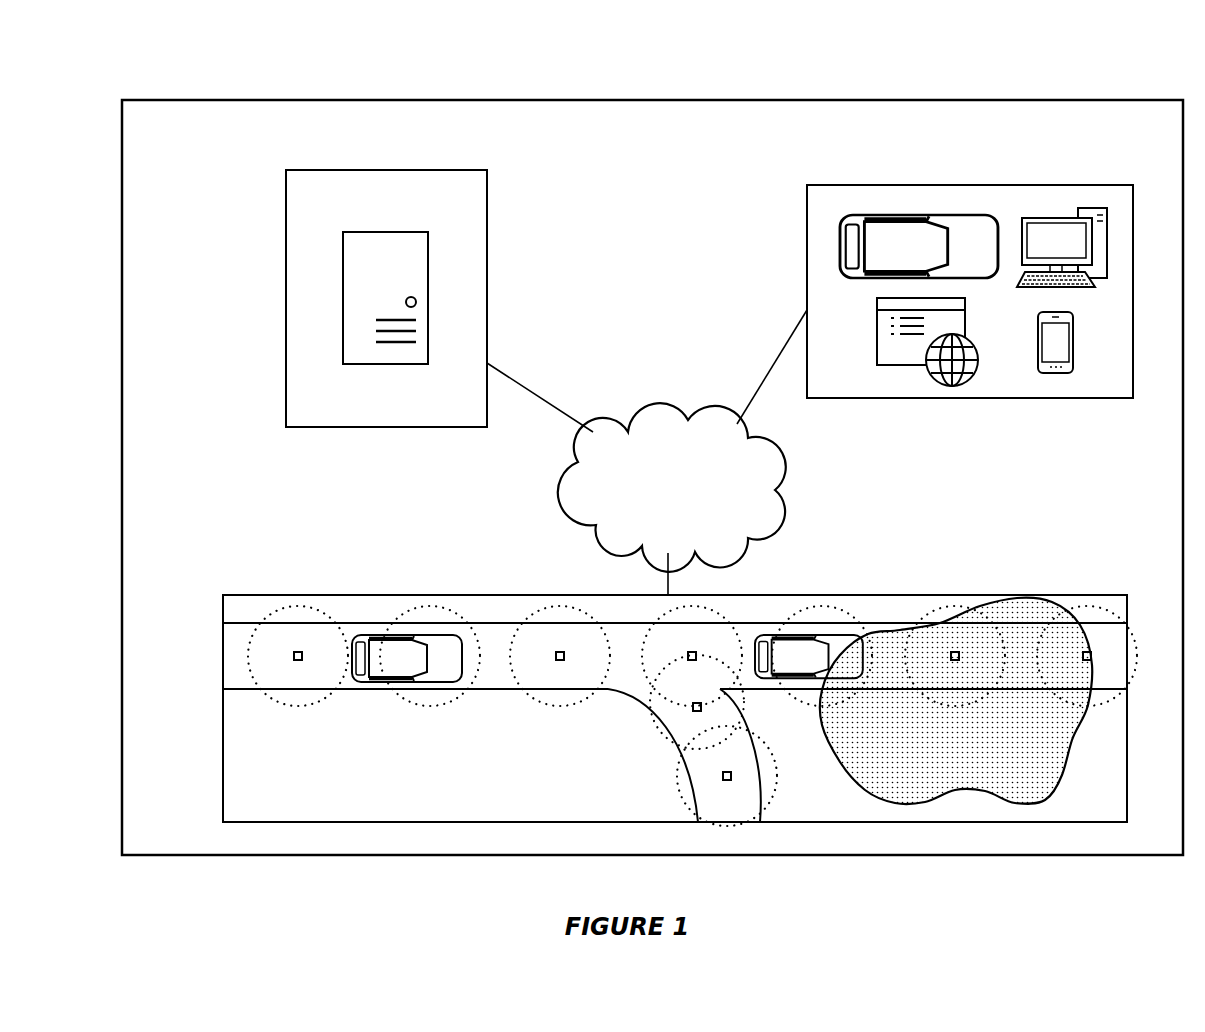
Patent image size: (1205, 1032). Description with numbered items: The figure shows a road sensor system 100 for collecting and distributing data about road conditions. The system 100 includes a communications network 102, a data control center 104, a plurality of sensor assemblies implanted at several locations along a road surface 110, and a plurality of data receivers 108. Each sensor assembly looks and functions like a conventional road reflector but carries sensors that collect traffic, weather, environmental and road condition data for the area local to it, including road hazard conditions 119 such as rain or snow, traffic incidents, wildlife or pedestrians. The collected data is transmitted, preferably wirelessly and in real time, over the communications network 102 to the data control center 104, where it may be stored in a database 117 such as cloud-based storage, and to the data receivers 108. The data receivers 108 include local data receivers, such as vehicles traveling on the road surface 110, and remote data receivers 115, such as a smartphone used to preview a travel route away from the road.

The road sensor system 100 is at (645, 76).
The communications network 102 is at (683, 430).
The data control center 104 is at (384, 170).
The database 117 is at (388, 232).
The data receivers 108 is at (1044, 185).
The remote data receivers 115 is at (893, 218).
The road surface 110 is at (233, 656).
The road hazard conditions 119 is at (1067, 737).